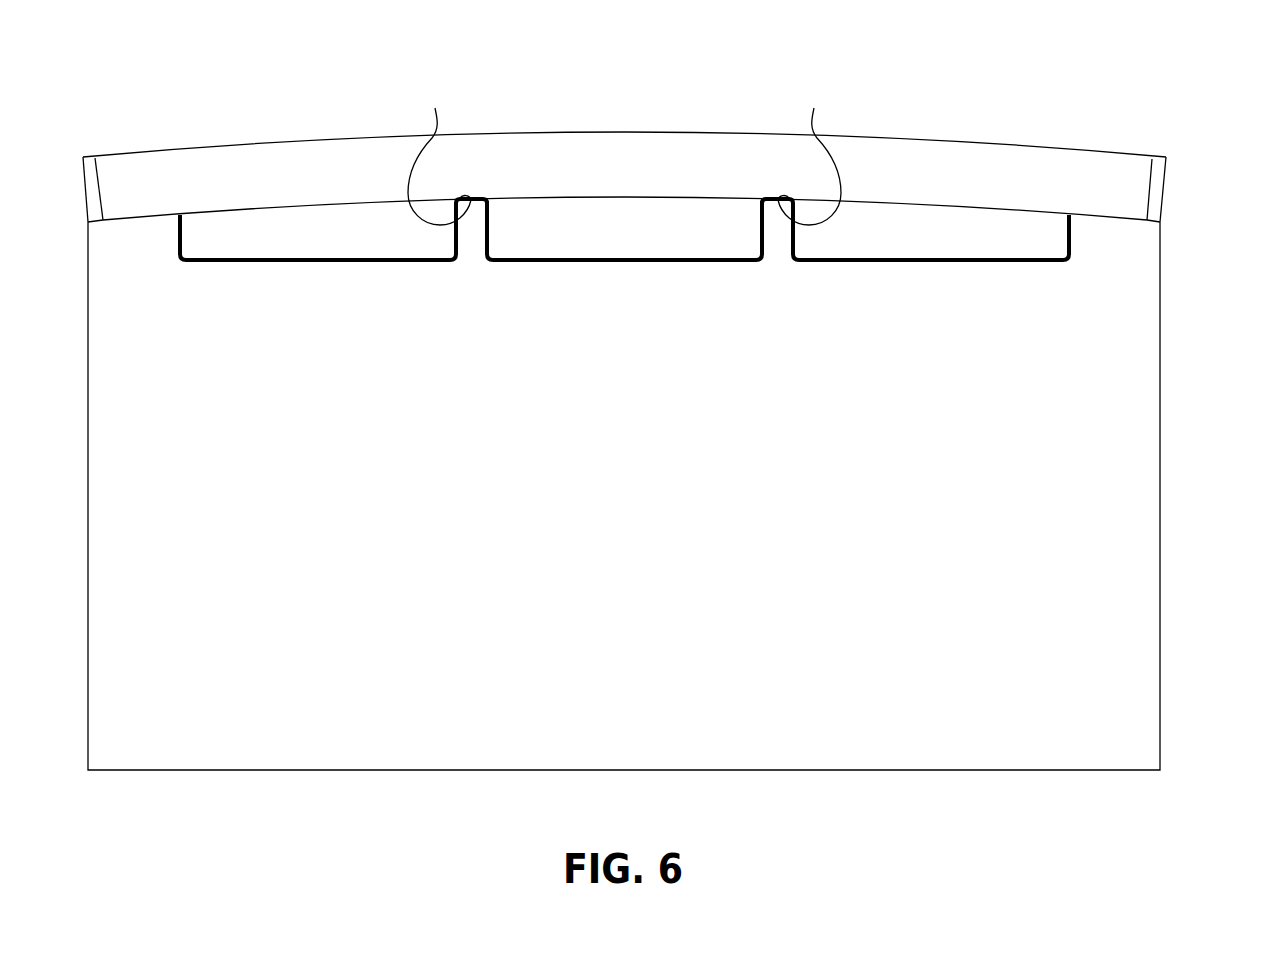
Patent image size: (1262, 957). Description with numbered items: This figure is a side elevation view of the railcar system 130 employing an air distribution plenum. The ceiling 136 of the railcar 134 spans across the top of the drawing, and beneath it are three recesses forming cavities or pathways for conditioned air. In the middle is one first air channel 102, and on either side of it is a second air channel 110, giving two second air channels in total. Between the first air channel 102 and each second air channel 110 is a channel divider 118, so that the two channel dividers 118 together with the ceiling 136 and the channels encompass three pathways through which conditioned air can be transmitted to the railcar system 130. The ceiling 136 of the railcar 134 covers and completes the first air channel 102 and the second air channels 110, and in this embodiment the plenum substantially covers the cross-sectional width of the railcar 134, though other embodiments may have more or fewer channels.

The railcar system 130 is at (1165, 72).
The ceiling 136 is at (572, 153).
The railcar 134 is at (365, 771).
The second air channel 110 is at (311, 230).
The first air channel 102 is at (693, 228).
The channel divider 118 is at (624, 151).